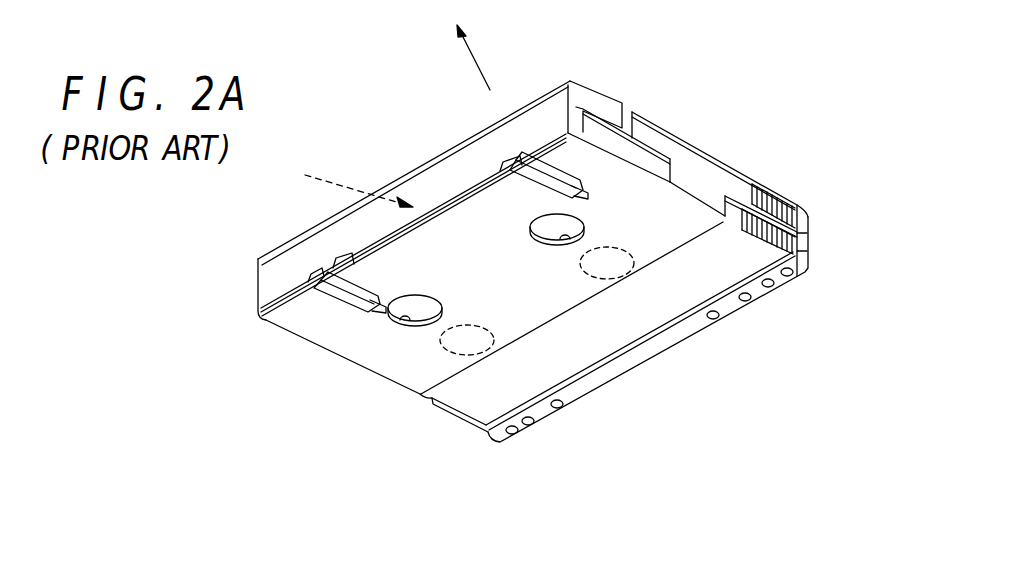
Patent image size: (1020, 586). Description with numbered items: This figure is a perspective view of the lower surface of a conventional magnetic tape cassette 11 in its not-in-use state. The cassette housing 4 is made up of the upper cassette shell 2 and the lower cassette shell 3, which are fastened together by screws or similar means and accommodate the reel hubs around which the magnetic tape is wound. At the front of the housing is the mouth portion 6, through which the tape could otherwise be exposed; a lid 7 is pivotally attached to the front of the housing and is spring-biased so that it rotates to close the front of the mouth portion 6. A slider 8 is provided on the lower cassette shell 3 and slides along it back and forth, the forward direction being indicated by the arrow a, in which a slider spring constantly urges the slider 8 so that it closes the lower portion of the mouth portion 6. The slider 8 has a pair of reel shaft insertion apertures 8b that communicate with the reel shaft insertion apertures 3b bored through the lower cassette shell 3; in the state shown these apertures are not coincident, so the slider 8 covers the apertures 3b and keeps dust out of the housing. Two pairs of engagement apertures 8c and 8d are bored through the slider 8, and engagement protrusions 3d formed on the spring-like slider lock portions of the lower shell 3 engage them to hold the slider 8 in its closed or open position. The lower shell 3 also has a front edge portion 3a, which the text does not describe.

The upper cassette shell 2 is at (810, 222).
The lower cassette shell 3 is at (810, 256).
The lower shell front flange 3a is at (493, 395).
The reel shaft insertion apertures 3b is at (637, 265).
The engagement protrusions 3d is at (593, 189).
The cassette housing 4 is at (857, 209).
The mouth portion 6 is at (348, 180).
The lid 7 is at (443, 162).
The slider 8 is at (413, 380).
The reel shaft insertion apertures 8b is at (563, 238).
The engagement apertures 8c is at (580, 175).
The engagement apertures 8d is at (583, 137).
The magnetic tape cassette 11 is at (824, 132).
The arrow a direction a is at (465, 45).